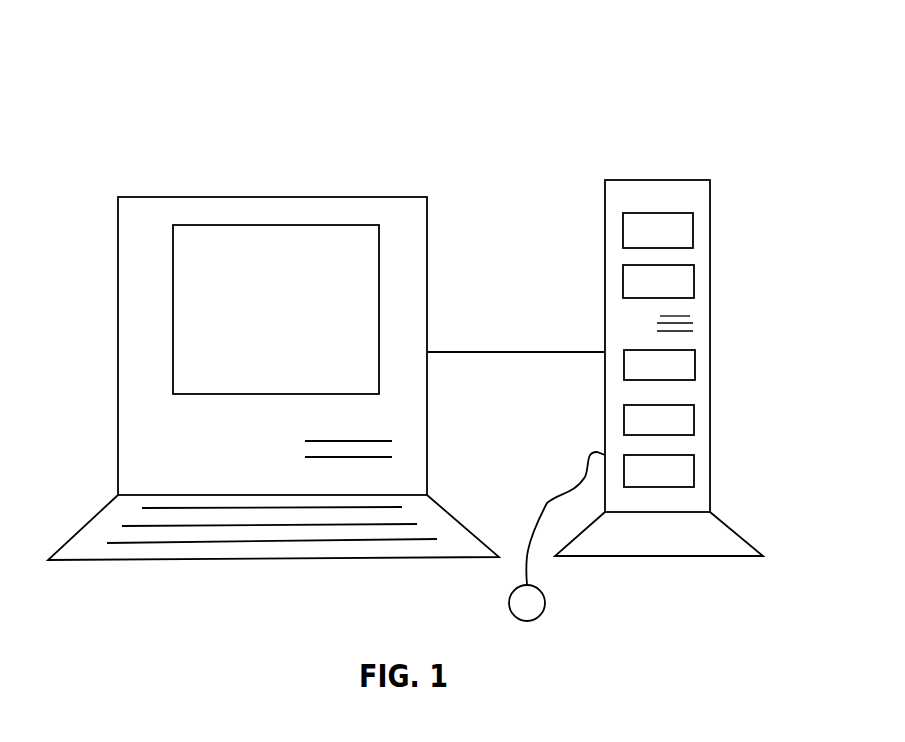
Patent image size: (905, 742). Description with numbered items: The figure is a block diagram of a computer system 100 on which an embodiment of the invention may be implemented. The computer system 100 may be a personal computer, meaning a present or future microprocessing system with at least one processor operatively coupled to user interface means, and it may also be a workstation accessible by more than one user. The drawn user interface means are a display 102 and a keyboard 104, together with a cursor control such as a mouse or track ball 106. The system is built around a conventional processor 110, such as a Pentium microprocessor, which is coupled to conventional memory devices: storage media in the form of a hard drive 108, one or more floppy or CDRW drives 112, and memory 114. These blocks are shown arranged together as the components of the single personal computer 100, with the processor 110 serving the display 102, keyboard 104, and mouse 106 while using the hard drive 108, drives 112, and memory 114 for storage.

The computer system 100 is at (663, 136).
The display 102 is at (276, 197).
The keyboard 104 is at (465, 525).
The mouse 106 is at (545, 612).
The hard drive 108 is at (695, 470).
The processor 110 is at (695, 420).
The floppy or CDRW drive 112 is at (693, 230).
The memory 114 is at (695, 365).